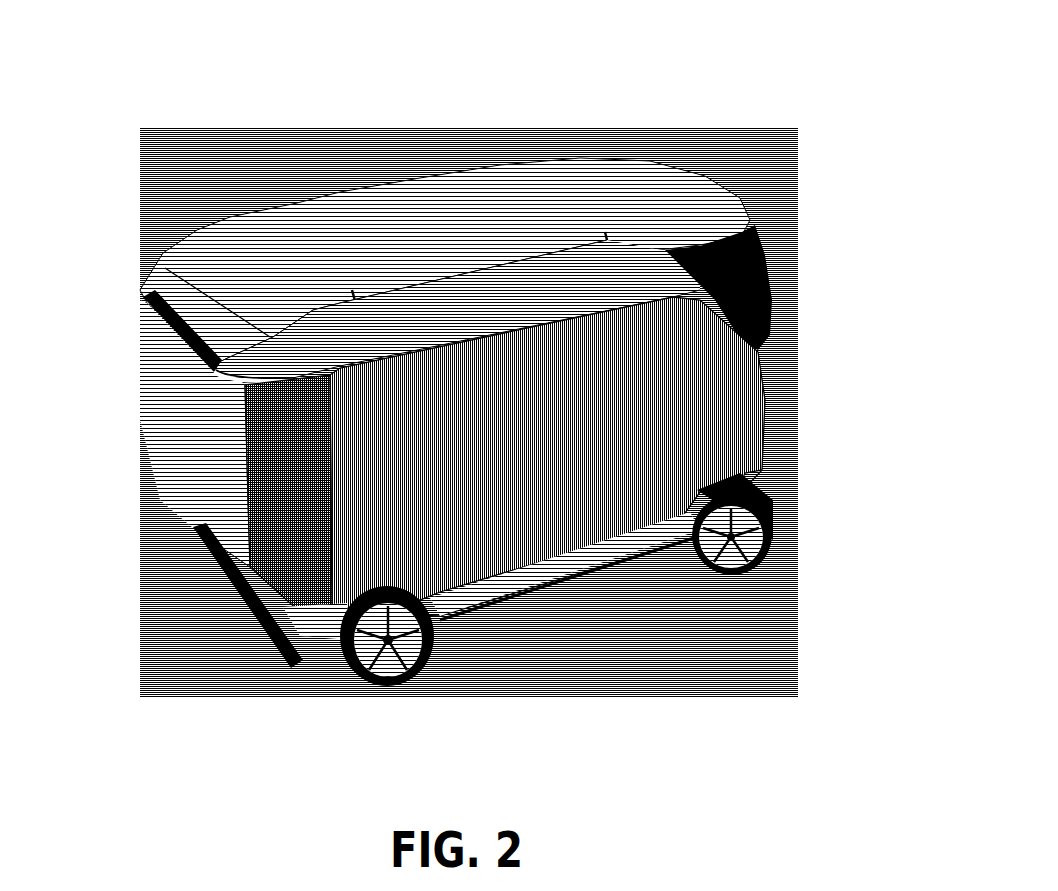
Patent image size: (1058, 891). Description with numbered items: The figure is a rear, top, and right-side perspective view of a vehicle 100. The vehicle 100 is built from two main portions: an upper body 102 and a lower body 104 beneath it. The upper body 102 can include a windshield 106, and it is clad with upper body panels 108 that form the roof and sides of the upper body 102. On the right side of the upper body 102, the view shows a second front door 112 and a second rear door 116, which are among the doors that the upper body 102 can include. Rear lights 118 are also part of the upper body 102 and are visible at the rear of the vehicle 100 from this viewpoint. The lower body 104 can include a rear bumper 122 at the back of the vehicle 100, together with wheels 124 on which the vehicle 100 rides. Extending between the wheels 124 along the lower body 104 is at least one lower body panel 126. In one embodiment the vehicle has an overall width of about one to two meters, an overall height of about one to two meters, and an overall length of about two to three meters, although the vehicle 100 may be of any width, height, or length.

The vehicle 100 is at (191, 82).
The upper body 102 is at (389, 204).
The lower body 104 is at (810, 466).
The windshield 106 is at (712, 288).
The upper body panels 108 is at (498, 208).
The second front door 112 is at (722, 402).
The second rear door 116 is at (277, 504).
The rear lights 118 is at (216, 364).
The rear bumper 122 is at (237, 607).
The wheels 124 is at (737, 548).
The lower body panel 126 is at (573, 592).